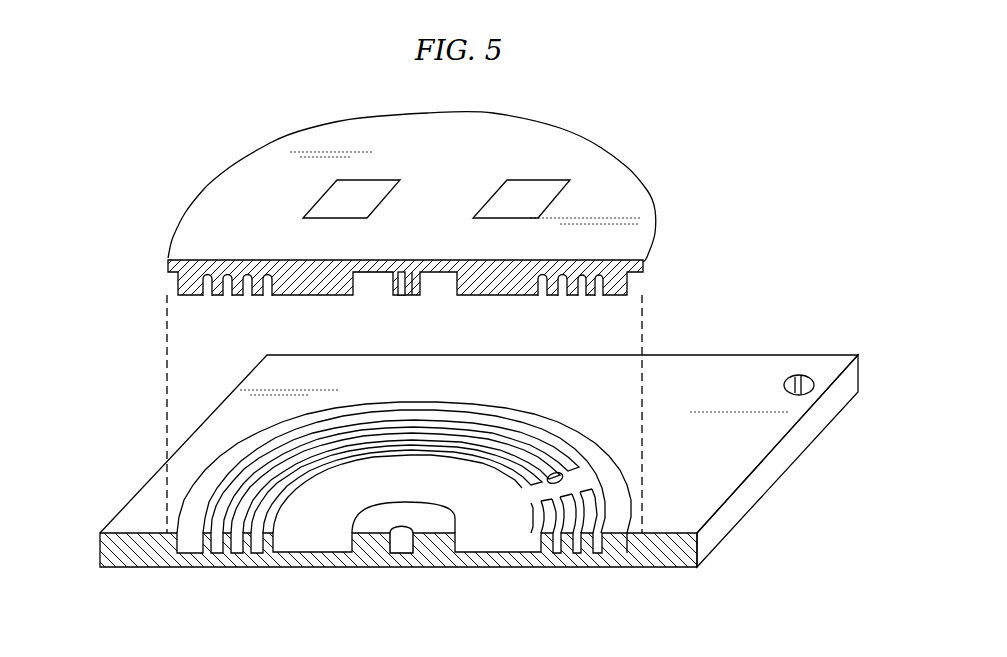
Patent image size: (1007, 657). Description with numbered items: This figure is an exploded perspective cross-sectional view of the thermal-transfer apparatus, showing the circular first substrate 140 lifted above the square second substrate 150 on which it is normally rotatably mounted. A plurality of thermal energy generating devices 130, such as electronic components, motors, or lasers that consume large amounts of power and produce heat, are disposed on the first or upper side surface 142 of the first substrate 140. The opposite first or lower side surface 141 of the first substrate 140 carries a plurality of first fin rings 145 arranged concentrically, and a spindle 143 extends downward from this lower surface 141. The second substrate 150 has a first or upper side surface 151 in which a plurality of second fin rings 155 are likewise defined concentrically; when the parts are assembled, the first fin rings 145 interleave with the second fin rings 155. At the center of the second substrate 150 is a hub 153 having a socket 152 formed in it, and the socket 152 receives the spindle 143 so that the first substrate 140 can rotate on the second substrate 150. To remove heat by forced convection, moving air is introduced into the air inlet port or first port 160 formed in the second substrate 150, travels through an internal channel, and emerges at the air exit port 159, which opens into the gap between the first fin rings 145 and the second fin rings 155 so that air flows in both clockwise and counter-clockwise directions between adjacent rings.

The thermal energy generating devices 130 is at (378, 192).
The first substrate 140 is at (425, 315).
The first or lower side surface 141 is at (383, 273).
The first or upper side surface 142 is at (507, 130).
The spindle 143 is at (421, 285).
The first fin rings 145 is at (200, 290).
The second substrate 150 is at (468, 481).
The first or upper side surface 151 is at (752, 452).
The socket 152 is at (377, 553).
The hub 153 is at (417, 553).
The second fin rings 155 is at (270, 472).
The air exit port 159 is at (565, 476).
The air inlet port or first port 160 is at (785, 385).